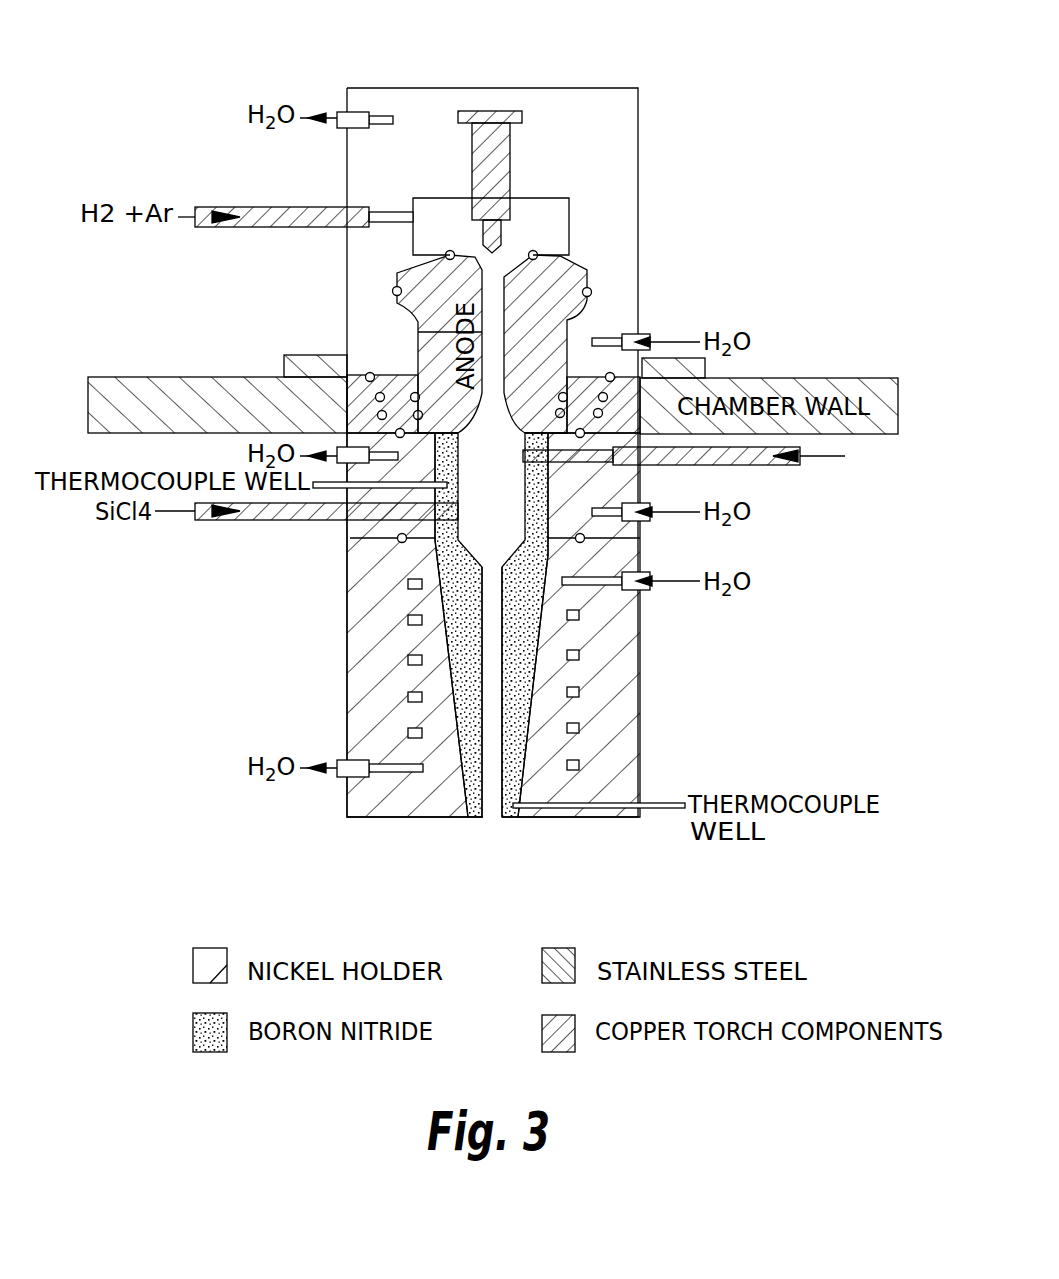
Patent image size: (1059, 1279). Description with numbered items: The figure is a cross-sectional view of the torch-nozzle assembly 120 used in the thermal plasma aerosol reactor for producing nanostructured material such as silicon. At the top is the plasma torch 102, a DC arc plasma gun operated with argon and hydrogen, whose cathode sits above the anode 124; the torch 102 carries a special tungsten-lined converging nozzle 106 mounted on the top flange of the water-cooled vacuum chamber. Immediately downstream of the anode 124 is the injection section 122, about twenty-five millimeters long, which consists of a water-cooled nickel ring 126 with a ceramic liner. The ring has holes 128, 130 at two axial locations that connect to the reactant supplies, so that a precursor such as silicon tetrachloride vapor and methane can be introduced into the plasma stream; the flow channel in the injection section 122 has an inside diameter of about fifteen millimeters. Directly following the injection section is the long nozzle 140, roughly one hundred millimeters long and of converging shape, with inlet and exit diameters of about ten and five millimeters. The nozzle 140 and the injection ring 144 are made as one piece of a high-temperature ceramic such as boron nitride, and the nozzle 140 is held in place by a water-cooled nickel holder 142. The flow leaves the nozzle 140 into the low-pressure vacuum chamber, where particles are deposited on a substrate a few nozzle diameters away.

The torch-nozzle assembly 120 is at (728, 92).
The plasma torch 102 is at (640, 275).
The anode 124 is at (418, 331).
The hole 130 is at (523, 458).
The hole 128 is at (460, 510).
The water-cooled nickel ring 126 is at (640, 486).
The injection section 122 is at (487, 527).
The injection ring 144 is at (540, 507).
The converging nozzle 106 is at (347, 660).
The nozzle 140 is at (490, 698).
The water-cooled nickel holder 142 is at (627, 712).